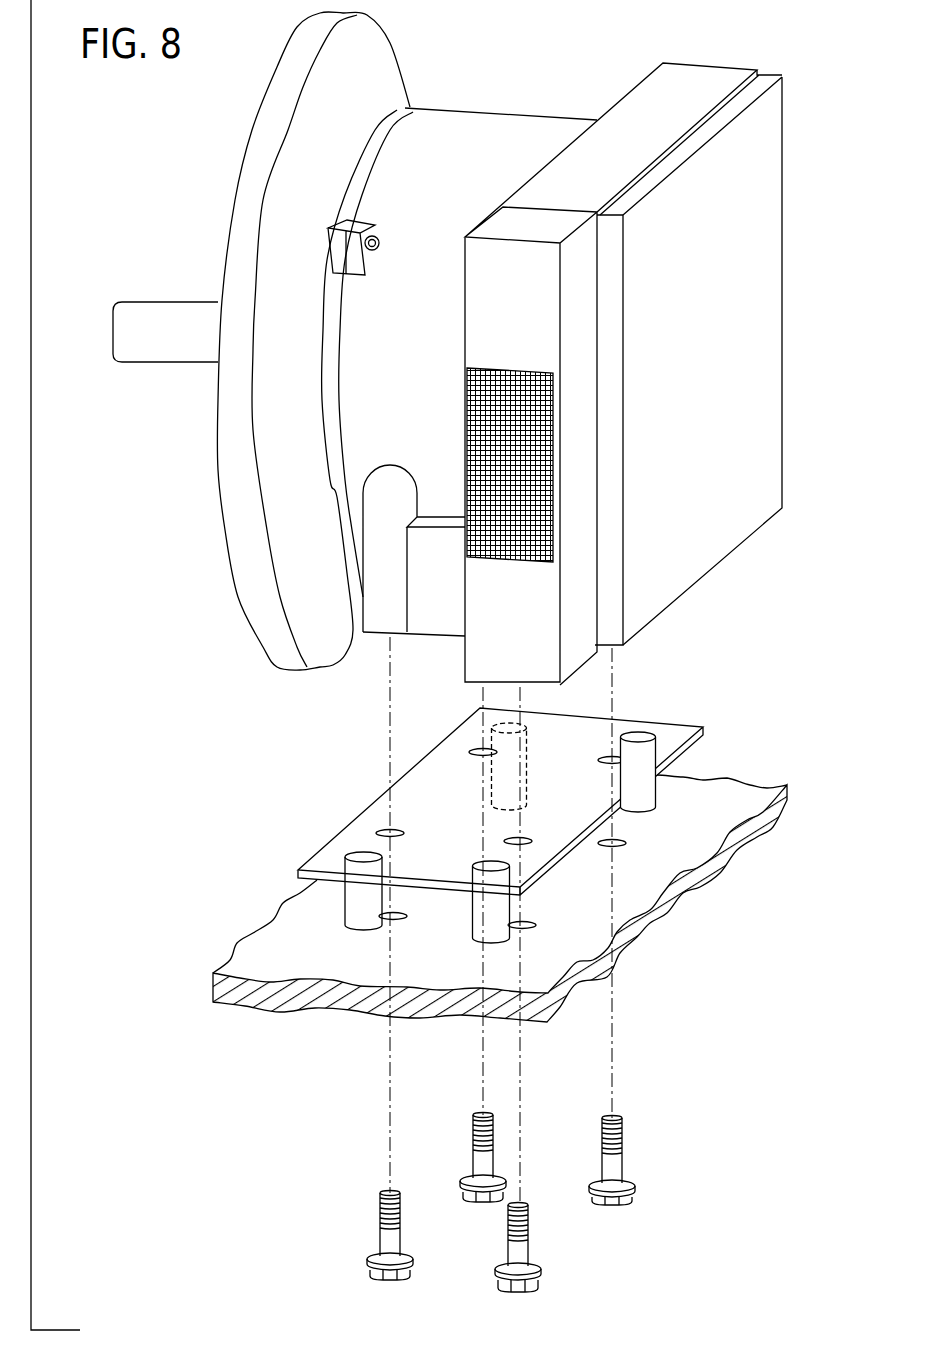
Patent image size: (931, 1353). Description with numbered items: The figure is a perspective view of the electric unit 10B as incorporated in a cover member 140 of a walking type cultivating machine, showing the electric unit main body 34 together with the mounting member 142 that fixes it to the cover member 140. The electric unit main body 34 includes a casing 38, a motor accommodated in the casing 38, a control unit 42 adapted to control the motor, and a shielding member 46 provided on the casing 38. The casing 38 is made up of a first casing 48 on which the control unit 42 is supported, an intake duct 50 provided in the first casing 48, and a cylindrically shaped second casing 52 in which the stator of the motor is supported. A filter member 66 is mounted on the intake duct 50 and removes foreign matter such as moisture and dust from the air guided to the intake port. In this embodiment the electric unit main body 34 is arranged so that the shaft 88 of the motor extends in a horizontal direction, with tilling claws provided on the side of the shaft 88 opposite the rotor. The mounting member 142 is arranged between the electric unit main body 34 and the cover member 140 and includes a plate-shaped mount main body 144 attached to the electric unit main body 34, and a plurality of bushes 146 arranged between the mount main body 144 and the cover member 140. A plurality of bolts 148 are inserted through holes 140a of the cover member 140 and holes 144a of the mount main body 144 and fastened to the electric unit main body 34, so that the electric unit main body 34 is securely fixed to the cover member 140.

The electric unit 10B is at (146, 133).
The electric unit main body 34 is at (652, 343).
The casing 38 is at (692, 58).
The control unit 42 is at (763, 283).
The shielding member 46 is at (247, 223).
The first casing 48 is at (518, 128).
The intake duct 50 is at (582, 310).
The second casing 52 is at (650, 82).
The filter member 66 is at (533, 497).
The shaft 88 is at (148, 345).
The cover member 140 is at (685, 890).
The holes 140a is at (397, 920).
The mounting member 142 is at (491, 807).
The mount main body 144 is at (707, 728).
The holes 144a is at (607, 755).
The bushes 146 is at (358, 916).
The bolts 148 is at (388, 1237).